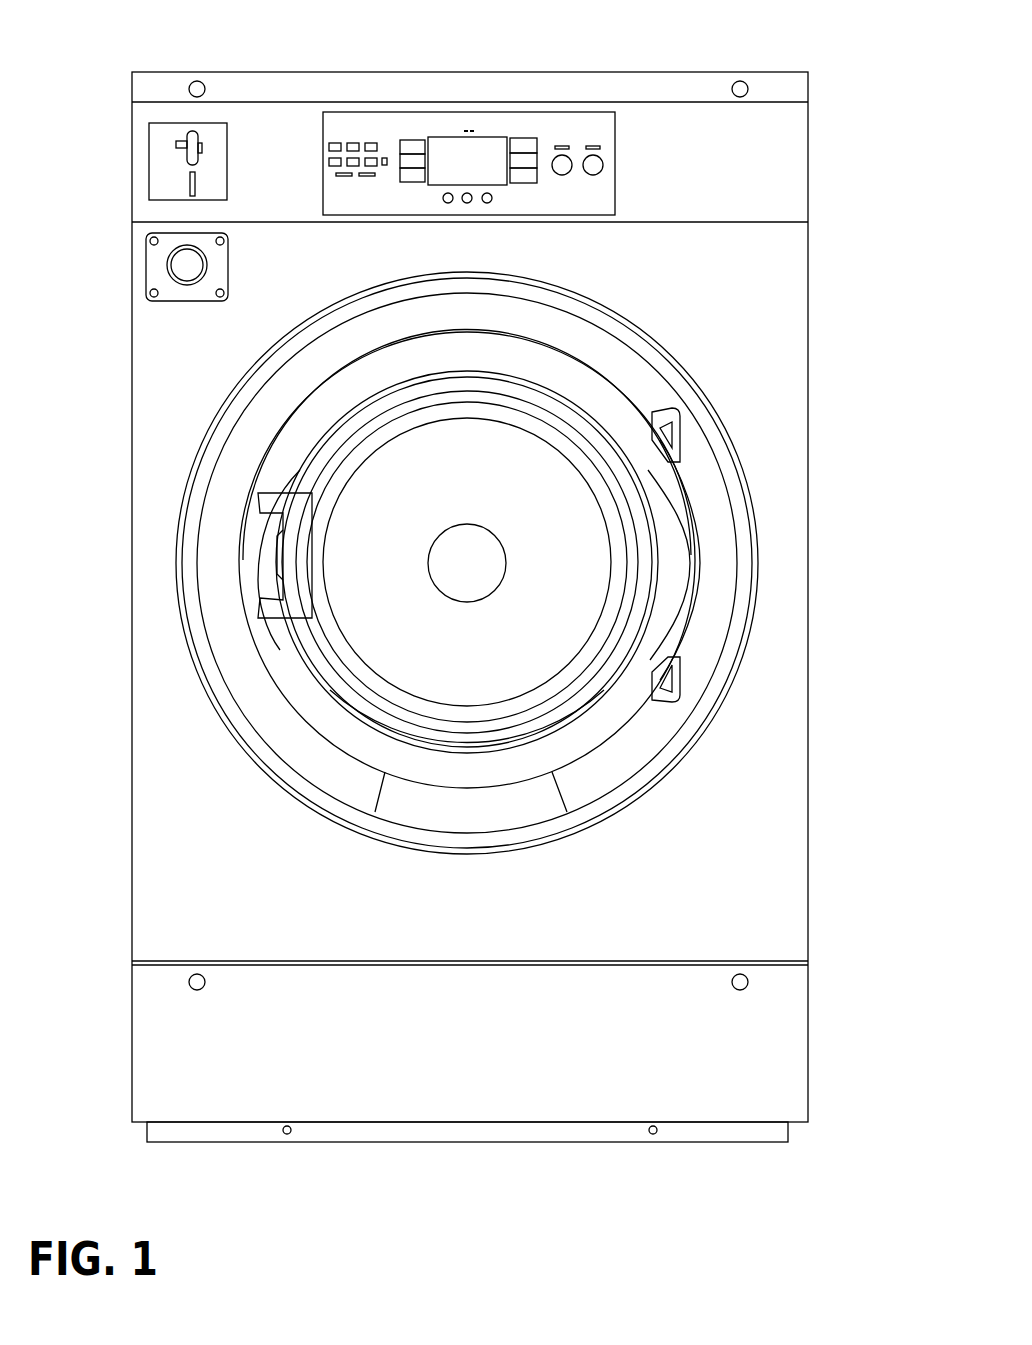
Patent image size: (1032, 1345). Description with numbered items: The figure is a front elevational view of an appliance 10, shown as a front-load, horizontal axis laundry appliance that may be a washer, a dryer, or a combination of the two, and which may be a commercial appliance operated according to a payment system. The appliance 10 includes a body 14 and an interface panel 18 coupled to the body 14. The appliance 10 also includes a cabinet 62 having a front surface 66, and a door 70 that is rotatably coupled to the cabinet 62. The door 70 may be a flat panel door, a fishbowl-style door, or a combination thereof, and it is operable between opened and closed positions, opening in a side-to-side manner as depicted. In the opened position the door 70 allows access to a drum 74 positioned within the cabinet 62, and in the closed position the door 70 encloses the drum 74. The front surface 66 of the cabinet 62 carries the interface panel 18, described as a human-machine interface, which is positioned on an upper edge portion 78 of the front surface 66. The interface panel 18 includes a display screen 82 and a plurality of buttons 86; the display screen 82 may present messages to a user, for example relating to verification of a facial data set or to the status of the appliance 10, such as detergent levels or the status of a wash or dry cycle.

The appliance 10 is at (843, 129).
The body 14 is at (240, 845).
The interface panel 18 is at (365, 126).
The cabinet 62 is at (737, 280).
The front surface 66 is at (763, 165).
The door 70 is at (310, 665).
The drum 74 is at (625, 556).
The upper edge portion 78 is at (516, 126).
The display screen 82 is at (448, 150).
The buttons 86 is at (323, 153).